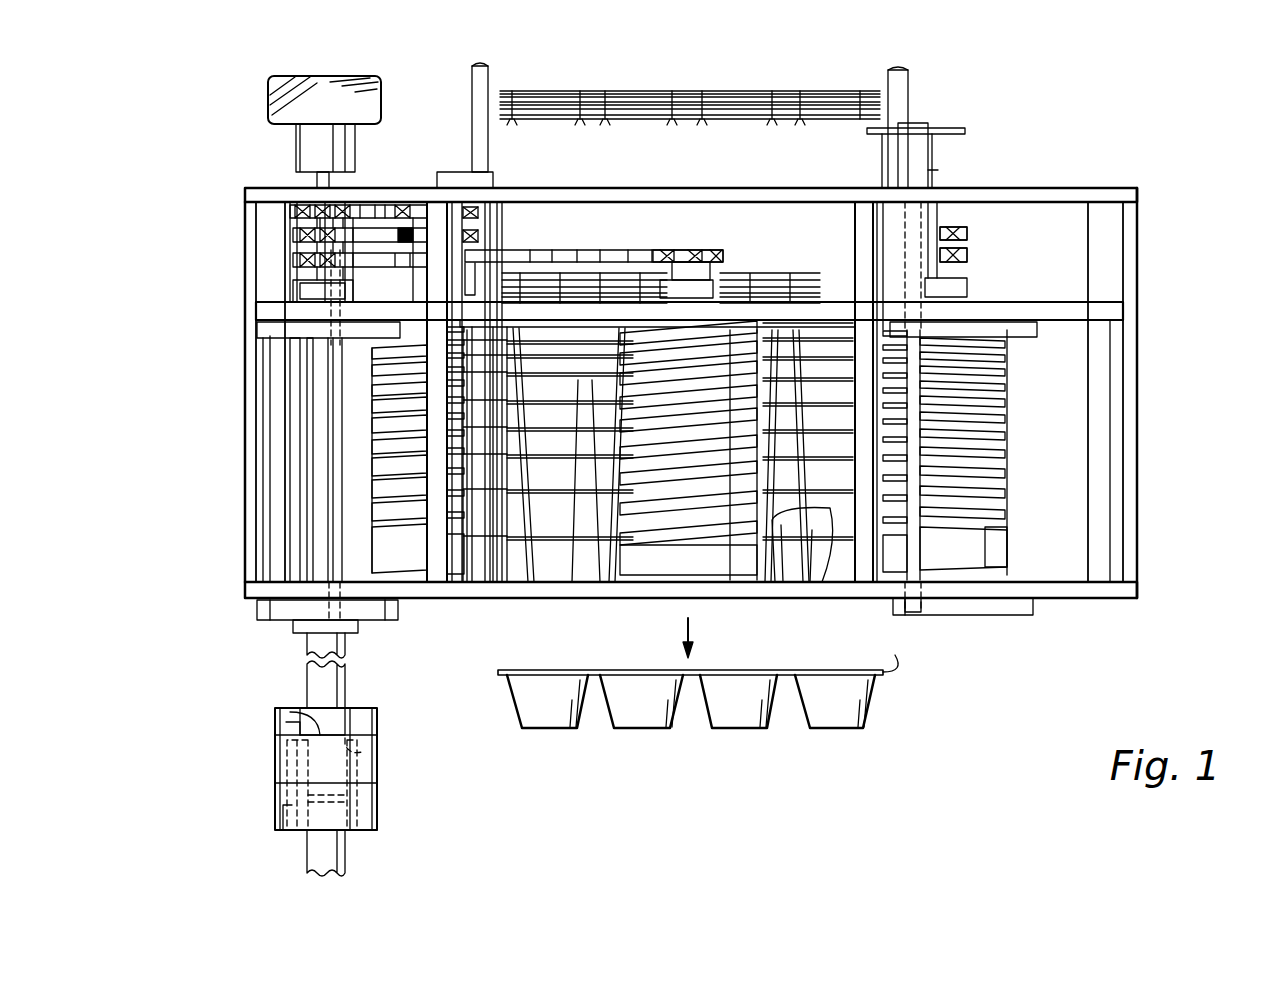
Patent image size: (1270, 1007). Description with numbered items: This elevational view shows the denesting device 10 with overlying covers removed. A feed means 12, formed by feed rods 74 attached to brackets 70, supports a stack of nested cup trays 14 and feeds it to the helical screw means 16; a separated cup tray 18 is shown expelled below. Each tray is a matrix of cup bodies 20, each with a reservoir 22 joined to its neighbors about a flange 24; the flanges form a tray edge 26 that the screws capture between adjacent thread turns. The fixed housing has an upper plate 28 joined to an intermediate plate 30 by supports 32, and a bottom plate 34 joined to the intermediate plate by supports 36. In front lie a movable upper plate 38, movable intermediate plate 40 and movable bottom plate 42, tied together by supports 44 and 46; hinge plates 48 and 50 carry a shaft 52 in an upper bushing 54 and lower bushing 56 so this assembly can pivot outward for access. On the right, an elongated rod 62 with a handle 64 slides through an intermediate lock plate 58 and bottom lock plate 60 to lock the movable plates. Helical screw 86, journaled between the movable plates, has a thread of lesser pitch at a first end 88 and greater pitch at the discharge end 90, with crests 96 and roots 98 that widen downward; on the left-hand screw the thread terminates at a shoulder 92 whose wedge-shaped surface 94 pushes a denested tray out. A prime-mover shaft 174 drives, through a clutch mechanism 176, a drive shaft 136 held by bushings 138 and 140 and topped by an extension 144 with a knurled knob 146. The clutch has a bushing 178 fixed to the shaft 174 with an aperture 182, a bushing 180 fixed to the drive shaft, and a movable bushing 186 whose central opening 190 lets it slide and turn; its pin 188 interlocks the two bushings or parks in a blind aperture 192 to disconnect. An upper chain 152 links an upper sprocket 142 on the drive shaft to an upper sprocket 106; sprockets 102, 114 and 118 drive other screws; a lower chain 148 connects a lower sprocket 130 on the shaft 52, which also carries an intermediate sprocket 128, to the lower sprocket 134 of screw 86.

The denesting device 10 is at (1112, 132).
The feed means 12 is at (830, 76).
The stack of nested cup trays 14 is at (850, 92).
The helical screw means 16 is at (1062, 404).
The cup tray 18 is at (723, 715).
The cup bodies 20 is at (700, 748).
The reservoir 22 is at (748, 714).
The flange 24 is at (732, 672).
The tray edge 26 is at (905, 668).
The upper plate 28 is at (250, 188).
The intermediate plate 30 is at (262, 322).
The supports 32 is at (262, 228).
The bottom plate 34 is at (247, 590).
The supports 36 is at (268, 527).
The movable upper plate 38 is at (866, 194).
The movable intermediate plate 40 is at (945, 312).
The movable bottom plate 42 is at (588, 598).
The supports 44 is at (440, 212).
The supports 46 is at (370, 403).
The hinge plate 48 is at (268, 342).
The hinge plate 50 is at (262, 620).
The shaft 52 is at (323, 448).
The upper bushing 54 is at (260, 332).
The lower bushing 56 is at (300, 634).
The intermediate lock plate 58 is at (1035, 330).
The bottom lock plate 60 is at (1010, 616).
The elongated rod 62 is at (950, 540).
The handle 64 is at (915, 136).
The brackets 70 is at (455, 172).
The feed rods 74 is at (472, 98).
The helical screw 86 is at (664, 560).
The first end 88 is at (726, 330).
The opposite end 90 is at (736, 577).
The shoulder 92 is at (515, 580).
The surface 94 is at (476, 576).
The crests 96 is at (812, 580).
The roots 98 is at (795, 580).
The intermediate sprocket 102 is at (496, 234).
The upper sprocket 106 is at (500, 200).
The intermediate sprocket 114 is at (970, 254).
The intermediate sprocket 118 is at (955, 226).
The intermediate sprocket 128 is at (295, 236).
The lower sprocket 130 is at (296, 260).
The lower sprocket 134 is at (698, 252).
The drive shaft 136 is at (295, 482).
The bushing 138 is at (296, 292).
The bushing 140 is at (288, 372).
The upper sprocket 142 is at (247, 214).
The extension 144 is at (316, 180).
The knurled knob 146 is at (270, 82).
The lower chain 148 is at (592, 252).
The upper chain 152 is at (370, 206).
The shaft 174 is at (346, 862).
The clutch mechanism 176 is at (354, 786).
The bushing 178 is at (378, 830).
The bushing 180 is at (378, 770).
The aperture 182 is at (282, 832).
The movable bushing 186 is at (378, 724).
The pin 188 is at (290, 772).
The central opening 190 is at (302, 700).
The aperture 192 is at (385, 750).